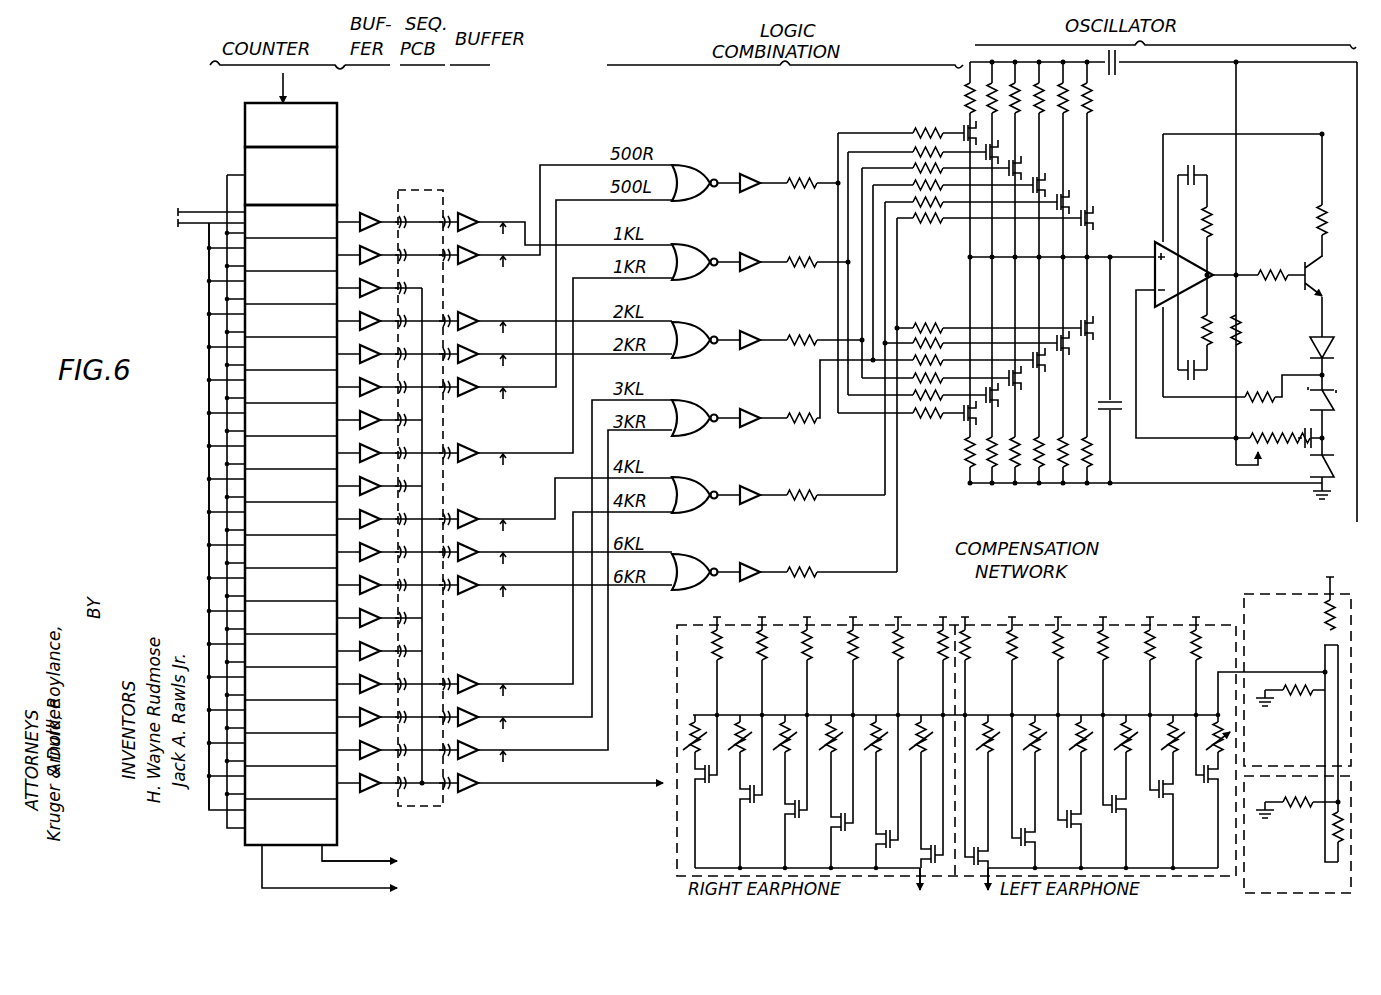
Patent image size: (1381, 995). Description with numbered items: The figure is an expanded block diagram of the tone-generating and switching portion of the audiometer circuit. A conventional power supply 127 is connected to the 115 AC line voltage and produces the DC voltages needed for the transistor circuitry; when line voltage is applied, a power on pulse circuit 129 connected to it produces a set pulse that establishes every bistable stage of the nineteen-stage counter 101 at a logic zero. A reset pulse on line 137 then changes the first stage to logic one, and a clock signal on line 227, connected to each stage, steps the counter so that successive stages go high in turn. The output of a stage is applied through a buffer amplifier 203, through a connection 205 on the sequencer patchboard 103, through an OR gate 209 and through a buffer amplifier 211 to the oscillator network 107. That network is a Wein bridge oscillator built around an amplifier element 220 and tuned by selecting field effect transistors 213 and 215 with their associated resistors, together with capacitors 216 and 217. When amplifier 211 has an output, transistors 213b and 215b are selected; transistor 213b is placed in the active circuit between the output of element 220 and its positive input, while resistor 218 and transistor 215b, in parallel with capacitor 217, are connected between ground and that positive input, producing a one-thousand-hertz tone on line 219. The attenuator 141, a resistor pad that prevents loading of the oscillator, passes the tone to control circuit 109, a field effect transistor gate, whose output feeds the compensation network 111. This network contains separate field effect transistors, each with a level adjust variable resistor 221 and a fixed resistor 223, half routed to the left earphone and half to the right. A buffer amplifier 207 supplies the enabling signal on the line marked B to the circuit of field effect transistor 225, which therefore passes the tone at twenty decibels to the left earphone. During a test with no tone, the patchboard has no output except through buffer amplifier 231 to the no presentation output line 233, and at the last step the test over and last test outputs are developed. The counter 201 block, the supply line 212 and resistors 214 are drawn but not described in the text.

The counter 101 is at (198, 454).
The sequencer patchboard 103 is at (422, 180).
The oscillator network 107 is at (975, 490).
The control circuit 109 is at (1244, 600).
The compensation network 111 is at (678, 754).
The AC line voltage 115 is at (286, 88).
The power supply 127 is at (337, 120).
The power on pulse circuit 129 is at (337, 160).
The reset line 137 is at (155, 201).
The attenuator 141 is at (1297, 834).
The counter 201 is at (247, 844).
The buffer amplifier 203 is at (364, 214).
The sequencer patchboard connection 205 is at (437, 222).
The buffer amplifier 207 is at (466, 215).
The OR gate 209 is at (682, 244).
The buffer amplifier 211 is at (749, 270).
The positive supply line 212 is at (1240, 128).
The field effect transistors 213 is at (1092, 219).
The field effect transistor 213b is at (960, 134).
The resistors 214 is at (967, 98).
The field effect transistors 215 is at (965, 461).
The field effect transistor 215b is at (963, 420).
The capacitor 216 is at (1118, 72).
The capacitor 217 is at (1115, 412).
The resistor 218 is at (1003, 470).
The output line 219 is at (1357, 522).
The amplifier element 220 is at (1200, 268).
The level adjust variable resistor 221 is at (672, 720).
The fixed resistor 223 is at (675, 655).
The field effect transistor 225 is at (1157, 806).
The clock line 227 is at (190, 227).
The buffer amplifier 231 is at (474, 792).
The no presentation output line 233 is at (570, 794).